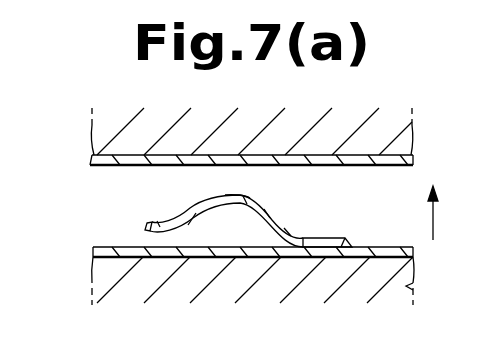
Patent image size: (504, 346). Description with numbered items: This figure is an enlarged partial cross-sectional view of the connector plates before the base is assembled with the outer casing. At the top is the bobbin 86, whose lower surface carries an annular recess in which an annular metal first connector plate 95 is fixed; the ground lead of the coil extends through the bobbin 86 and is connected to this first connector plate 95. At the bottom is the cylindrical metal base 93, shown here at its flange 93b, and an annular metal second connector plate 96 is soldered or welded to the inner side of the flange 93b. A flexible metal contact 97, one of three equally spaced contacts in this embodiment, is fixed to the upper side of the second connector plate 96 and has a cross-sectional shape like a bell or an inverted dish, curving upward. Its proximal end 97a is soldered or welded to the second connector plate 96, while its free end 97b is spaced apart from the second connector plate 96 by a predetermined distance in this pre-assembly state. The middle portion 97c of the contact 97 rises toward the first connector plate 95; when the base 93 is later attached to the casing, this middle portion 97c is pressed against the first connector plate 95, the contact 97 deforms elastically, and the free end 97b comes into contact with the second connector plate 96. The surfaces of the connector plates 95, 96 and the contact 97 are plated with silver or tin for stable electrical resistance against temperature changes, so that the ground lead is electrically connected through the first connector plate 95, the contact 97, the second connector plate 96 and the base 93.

The bobbin 86 is at (92, 152).
The first connector plate 95 is at (120, 166).
The base 93 is at (92, 284).
The flange 93b is at (414, 289).
The second connector plate 96 is at (400, 246).
The contact 97 is at (218, 199).
The proximal end 97a is at (336, 238).
The free end 97b is at (146, 226).
The middle portion 97c is at (243, 195).